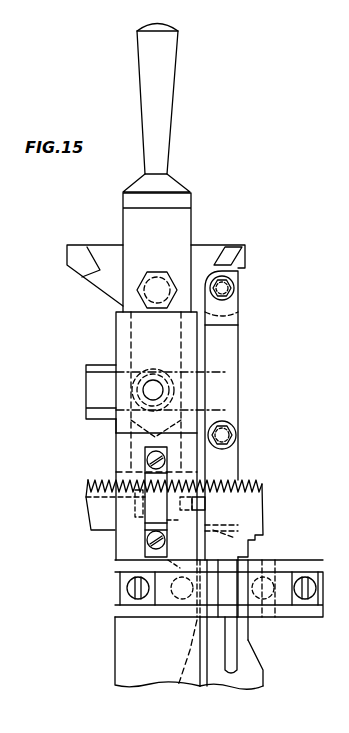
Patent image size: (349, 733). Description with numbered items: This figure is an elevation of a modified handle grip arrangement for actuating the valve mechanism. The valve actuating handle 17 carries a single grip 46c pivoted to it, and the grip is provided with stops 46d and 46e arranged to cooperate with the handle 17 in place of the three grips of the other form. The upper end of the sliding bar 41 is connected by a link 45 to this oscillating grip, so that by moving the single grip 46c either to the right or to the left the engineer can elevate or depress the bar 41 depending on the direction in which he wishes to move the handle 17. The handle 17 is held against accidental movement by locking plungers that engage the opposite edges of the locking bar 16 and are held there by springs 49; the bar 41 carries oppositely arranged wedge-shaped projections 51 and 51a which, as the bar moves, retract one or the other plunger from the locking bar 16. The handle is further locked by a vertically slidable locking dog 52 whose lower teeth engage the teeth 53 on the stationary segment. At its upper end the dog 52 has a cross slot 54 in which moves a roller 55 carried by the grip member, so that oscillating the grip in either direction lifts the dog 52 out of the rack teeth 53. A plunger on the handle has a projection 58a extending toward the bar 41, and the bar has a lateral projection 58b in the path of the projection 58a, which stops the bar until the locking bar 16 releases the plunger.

The locking bar 16 is at (250, 682).
The valve actuating handle 17 is at (124, 665).
The sliding bar 41 is at (235, 452).
The link 45 is at (238, 346).
The single grip 46c is at (163, 91).
The stop 46d is at (68, 253).
The stop 46e is at (245, 252).
The springs 49 is at (183, 600).
The wedge-shaped projection 51 is at (211, 517).
The wedge-shaped projection 51a is at (233, 657).
The locking dog 52 is at (98, 413).
The teeth 53 is at (252, 492).
The cross slot 54 is at (88, 392).
The roller 55 is at (152, 373).
The projection 58a is at (185, 525).
The lateral projection 58b is at (200, 497).